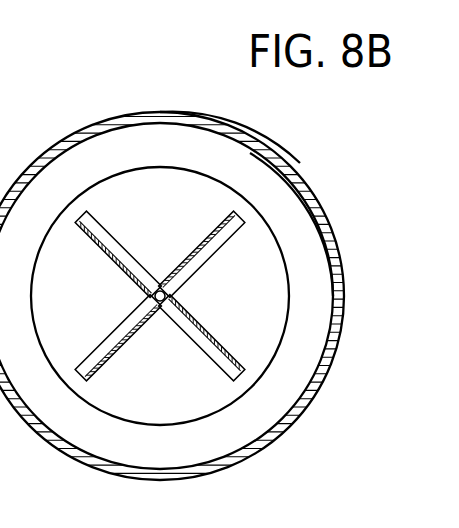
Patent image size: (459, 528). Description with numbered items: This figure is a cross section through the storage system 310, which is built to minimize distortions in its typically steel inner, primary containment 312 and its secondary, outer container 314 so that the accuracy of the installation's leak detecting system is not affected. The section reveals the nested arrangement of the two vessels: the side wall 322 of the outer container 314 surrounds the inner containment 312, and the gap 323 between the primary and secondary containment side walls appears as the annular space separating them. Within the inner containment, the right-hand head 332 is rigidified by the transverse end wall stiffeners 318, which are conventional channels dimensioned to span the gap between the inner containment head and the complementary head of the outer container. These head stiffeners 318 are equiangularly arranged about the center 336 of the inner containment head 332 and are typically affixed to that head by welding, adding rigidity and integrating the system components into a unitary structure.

The storage system 310 is at (321, 155).
The inner, primary containment 312 is at (300, 302).
The secondary, outer container 314 is at (312, 418).
The transverse end wall stiffeners 318 is at (209, 198).
The side wall 322 is at (331, 223).
The gap 323 is at (237, 158).
The right-hand head 332 is at (176, 383).
The center 336 is at (167, 298).